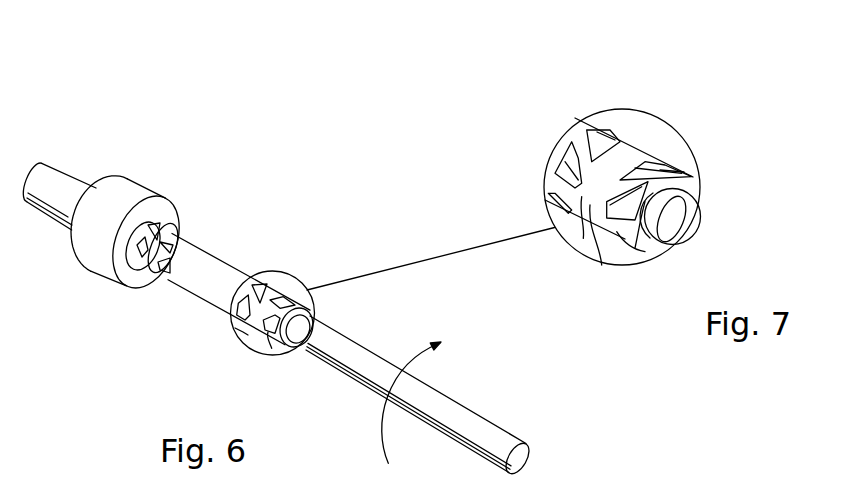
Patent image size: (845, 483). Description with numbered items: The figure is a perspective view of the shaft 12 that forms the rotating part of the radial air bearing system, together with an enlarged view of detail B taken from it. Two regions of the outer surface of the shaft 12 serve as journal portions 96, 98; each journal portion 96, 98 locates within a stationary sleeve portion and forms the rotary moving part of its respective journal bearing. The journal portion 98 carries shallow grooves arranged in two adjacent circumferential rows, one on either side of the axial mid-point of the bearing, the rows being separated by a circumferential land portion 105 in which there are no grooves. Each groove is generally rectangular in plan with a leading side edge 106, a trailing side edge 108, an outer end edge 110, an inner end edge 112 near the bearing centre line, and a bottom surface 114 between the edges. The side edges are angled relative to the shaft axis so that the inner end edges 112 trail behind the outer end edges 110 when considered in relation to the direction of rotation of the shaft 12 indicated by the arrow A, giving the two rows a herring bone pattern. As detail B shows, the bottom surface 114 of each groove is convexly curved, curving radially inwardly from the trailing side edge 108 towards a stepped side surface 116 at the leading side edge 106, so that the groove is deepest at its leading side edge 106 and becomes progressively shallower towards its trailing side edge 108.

In FIG. 6, the shaft 12 is at (468, 420).
In FIG. 6, the journal portion 96 is at (185, 236).
In FIG. 7, the journal portion 98 is at (650, 130).
In FIG. 6, the circumferential land portion 105 is at (158, 270).
In FIG. 7, the circumferential land portion 105 is at (617, 162).
In FIG. 7, the leading side edge 106 is at (582, 185).
In FIG. 7, the trailing side edge 108 is at (548, 193).
In FIG. 7, the outer end edge 110 is at (556, 170).
In FIG. 7, the inner end edge 112 is at (582, 238).
In FIG. 7, the bottom surface 114 is at (684, 160).
In FIG. 7, the stepped side surface 116 is at (647, 158).
In FIG. 6, the arrow indicating direction of rotation A is at (383, 437).
In FIG. 6, the detail B is at (240, 345).